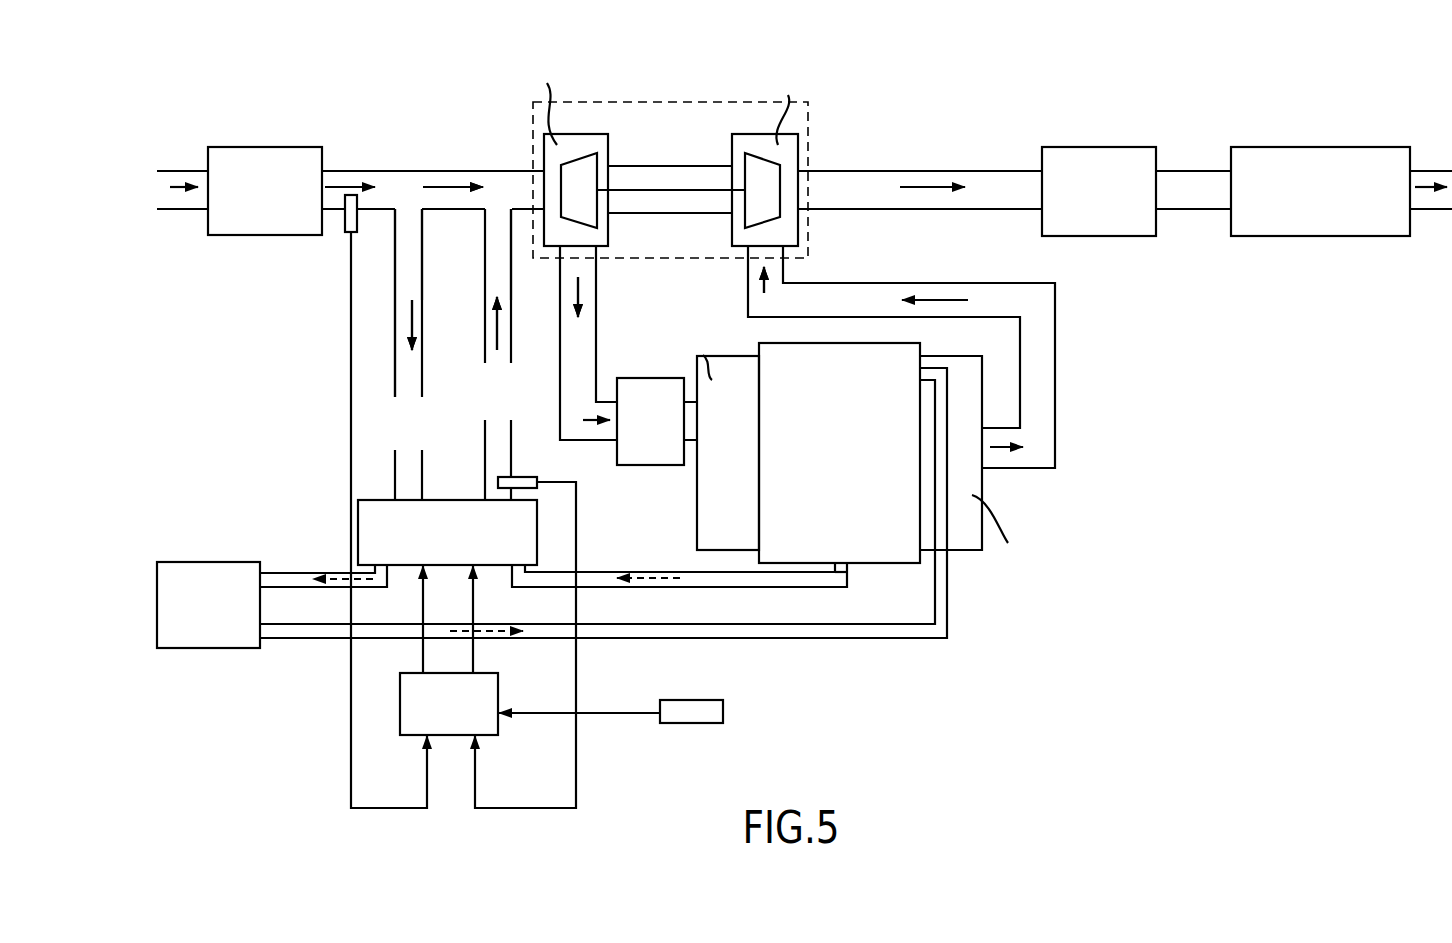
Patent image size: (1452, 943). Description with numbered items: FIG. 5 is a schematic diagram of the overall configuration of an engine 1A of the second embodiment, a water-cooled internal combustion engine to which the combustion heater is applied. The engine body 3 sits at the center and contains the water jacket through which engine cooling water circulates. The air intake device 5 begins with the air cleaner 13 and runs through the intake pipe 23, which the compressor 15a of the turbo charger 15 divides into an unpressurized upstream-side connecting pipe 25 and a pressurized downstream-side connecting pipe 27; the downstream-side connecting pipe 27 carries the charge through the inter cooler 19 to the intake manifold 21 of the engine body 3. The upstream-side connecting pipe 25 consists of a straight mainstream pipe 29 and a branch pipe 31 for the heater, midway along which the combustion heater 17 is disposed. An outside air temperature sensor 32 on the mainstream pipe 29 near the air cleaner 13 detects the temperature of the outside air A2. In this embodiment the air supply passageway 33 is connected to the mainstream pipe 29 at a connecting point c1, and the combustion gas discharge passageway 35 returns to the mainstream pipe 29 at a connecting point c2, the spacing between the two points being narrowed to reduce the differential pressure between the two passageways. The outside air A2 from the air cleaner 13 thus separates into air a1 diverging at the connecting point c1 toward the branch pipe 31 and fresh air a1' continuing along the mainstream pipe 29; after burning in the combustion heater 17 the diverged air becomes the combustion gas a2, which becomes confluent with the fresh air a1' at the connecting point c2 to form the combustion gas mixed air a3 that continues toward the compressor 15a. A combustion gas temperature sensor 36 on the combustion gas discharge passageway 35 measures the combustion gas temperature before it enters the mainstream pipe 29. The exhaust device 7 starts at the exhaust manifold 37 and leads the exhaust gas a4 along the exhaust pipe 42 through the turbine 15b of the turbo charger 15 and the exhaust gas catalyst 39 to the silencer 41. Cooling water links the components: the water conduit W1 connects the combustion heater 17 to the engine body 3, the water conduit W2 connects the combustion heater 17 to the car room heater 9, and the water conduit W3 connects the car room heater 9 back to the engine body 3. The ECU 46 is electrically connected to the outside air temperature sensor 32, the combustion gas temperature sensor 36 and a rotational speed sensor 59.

The engine 1A is at (848, 123).
The engine body 3 is at (898, 560).
The air intake device 5 is at (265, 320).
The exhaust device 7 is at (962, 153).
The car room heater 9 is at (190, 650).
The air cleaner 13 is at (263, 147).
The turbo charger 15 is at (623, 45).
The compressor 15a is at (570, 134).
The turbine 15b is at (767, 134).
The combustion heater 17 is at (373, 498).
The inter cooler 19 is at (630, 465).
The intake manifold 21 is at (708, 552).
The intake pipe 23 is at (507, 170).
The upstream-side connecting pipe 25 is at (388, 111).
The downstream-side connecting pipe 27 is at (597, 273).
The mainstream pipe 29 is at (427, 173).
The branch pipe for heater 31 is at (395, 257).
The outside air temperature sensor 32 is at (349, 233).
The air supply passageway 33 is at (407, 272).
The combustion gas discharge passageway 35 is at (483, 268).
The combustion gas temperature sensor 36 is at (523, 476).
The exhaust manifold 37 is at (970, 552).
The exhaust gas catalyst 39 is at (1095, 147).
The silencer 41 is at (1302, 147).
The exhaust pipe 42 is at (1057, 358).
The ECU 46 is at (448, 737).
The rotational speed sensor 59 is at (690, 725).
The outside air A2 is at (327, 188).
The diverging air a1 is at (352, 359).
The non-diverging fresh air a1' is at (466, 149).
The combustion gas a2 is at (497, 333).
The combustion gas mixed air a3 is at (598, 278).
The exhaust gas a4 is at (767, 293).
The connecting point c1 is at (422, 210).
The connecting point c2 is at (497, 197).
The water conduit W1 is at (803, 588).
The water conduit W2 is at (287, 573).
The water conduit W3 is at (295, 640).